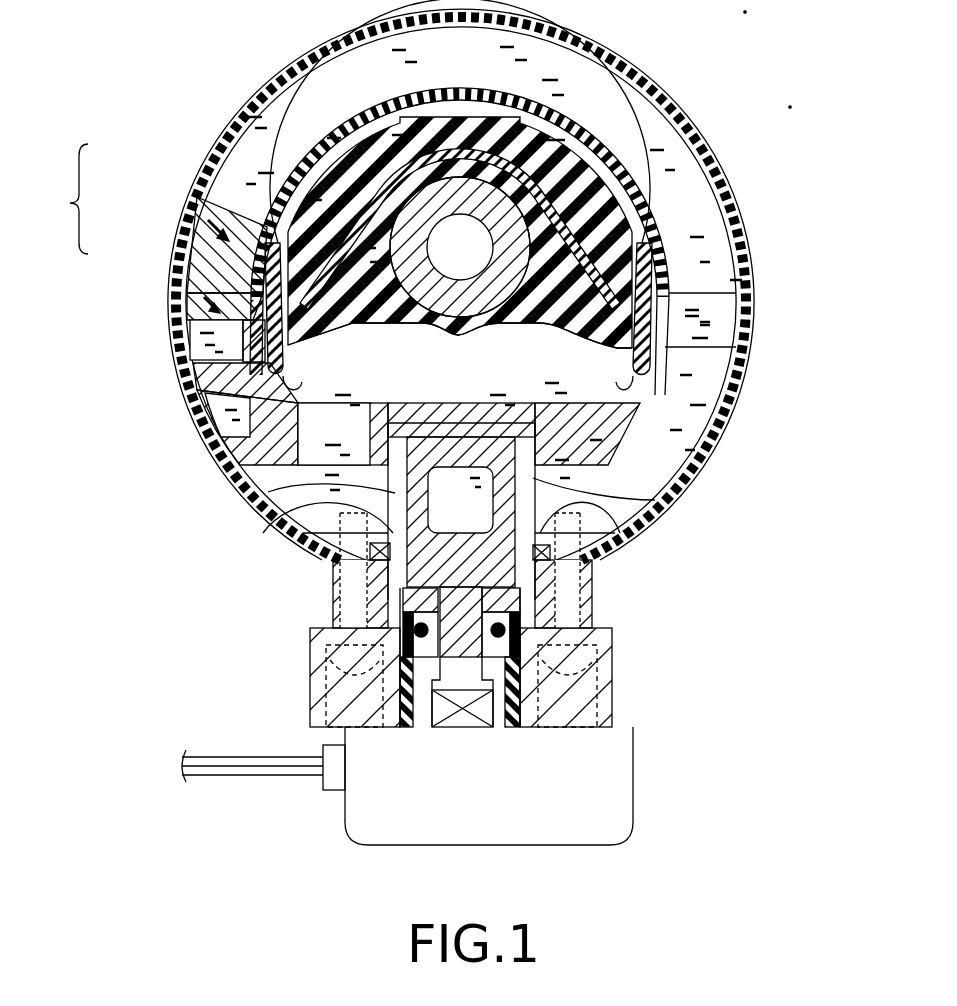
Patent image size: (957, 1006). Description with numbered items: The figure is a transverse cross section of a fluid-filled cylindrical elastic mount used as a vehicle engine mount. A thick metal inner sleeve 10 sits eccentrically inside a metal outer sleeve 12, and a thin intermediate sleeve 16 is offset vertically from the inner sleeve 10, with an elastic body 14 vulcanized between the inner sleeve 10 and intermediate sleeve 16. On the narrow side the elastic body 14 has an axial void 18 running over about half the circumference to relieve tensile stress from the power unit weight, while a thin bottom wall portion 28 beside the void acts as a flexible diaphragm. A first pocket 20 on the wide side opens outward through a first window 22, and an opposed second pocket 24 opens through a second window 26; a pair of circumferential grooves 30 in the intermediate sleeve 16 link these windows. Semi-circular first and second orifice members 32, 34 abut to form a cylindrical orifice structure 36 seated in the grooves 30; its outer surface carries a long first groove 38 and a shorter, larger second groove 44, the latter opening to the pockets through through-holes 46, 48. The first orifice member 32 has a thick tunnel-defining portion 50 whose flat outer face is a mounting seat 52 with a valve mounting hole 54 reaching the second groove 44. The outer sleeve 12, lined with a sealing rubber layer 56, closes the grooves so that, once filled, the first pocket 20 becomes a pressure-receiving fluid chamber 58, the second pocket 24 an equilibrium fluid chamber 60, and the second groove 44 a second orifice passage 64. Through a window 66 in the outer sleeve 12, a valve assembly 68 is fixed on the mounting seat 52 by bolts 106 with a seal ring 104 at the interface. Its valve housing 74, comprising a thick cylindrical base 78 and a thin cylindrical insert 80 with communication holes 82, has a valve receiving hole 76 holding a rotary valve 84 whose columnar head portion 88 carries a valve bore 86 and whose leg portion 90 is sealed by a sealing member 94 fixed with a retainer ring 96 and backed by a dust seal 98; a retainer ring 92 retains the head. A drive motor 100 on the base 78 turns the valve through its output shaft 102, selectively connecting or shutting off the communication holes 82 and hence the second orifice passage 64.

The inner sleeve 10 is at (414, 262).
The outer sleeve 12 is at (645, 69).
The elastic body 14 is at (577, 273).
The intermediate sleeve 16 is at (669, 352).
The axial void 18 is at (543, 208).
The first pocket 20 is at (540, 327).
The first window 22 is at (258, 376).
The second pocket 24 is at (329, 232).
The second window 26 is at (657, 228).
The bottom wall portion 28 is at (380, 167).
The circumferential grooves 30 is at (190, 342).
The first orifice member 32 is at (182, 280).
The second orifice member 34 is at (190, 200).
The orifice structure 36 is at (60, 199).
The first groove 38 is at (220, 437).
The second groove 44 is at (640, 424).
The through-hole 46 is at (243, 468).
The through-hole 48 is at (293, 167).
The tunnel-defining portion 50 is at (593, 596).
The mounting seat 52 is at (332, 580).
The valve mounting hole 54 is at (531, 467).
The sealing rubber layer 56 is at (570, 34).
The pressure-receiving fluid chamber 58 is at (187, 420).
The equilibrium fluid chamber 60 is at (573, 153).
The second orifice passage 64 is at (713, 255).
The window 66 is at (597, 583).
The valve assembly 68 is at (632, 672).
The valve housing 74 is at (294, 691).
The valve receiving hole 76 is at (415, 423).
The cylindrical base 78 is at (605, 691).
The cylindrical insert 80 is at (370, 457).
The communication holes 82 is at (277, 520).
The rotary valve 84 is at (470, 433).
The valve bore 86 is at (416, 488).
The head portion 88 is at (262, 492).
The leg portion 90 is at (472, 618).
The retainer ring 92 is at (400, 597).
The sealing member 94 is at (520, 636).
The retainer ring 96 is at (312, 638).
The dust seal 98 is at (325, 703).
The drive motor 100 is at (517, 838).
The output shaft 102 is at (455, 720).
The seal ring 104 is at (620, 550).
The bolts 106 is at (313, 663).